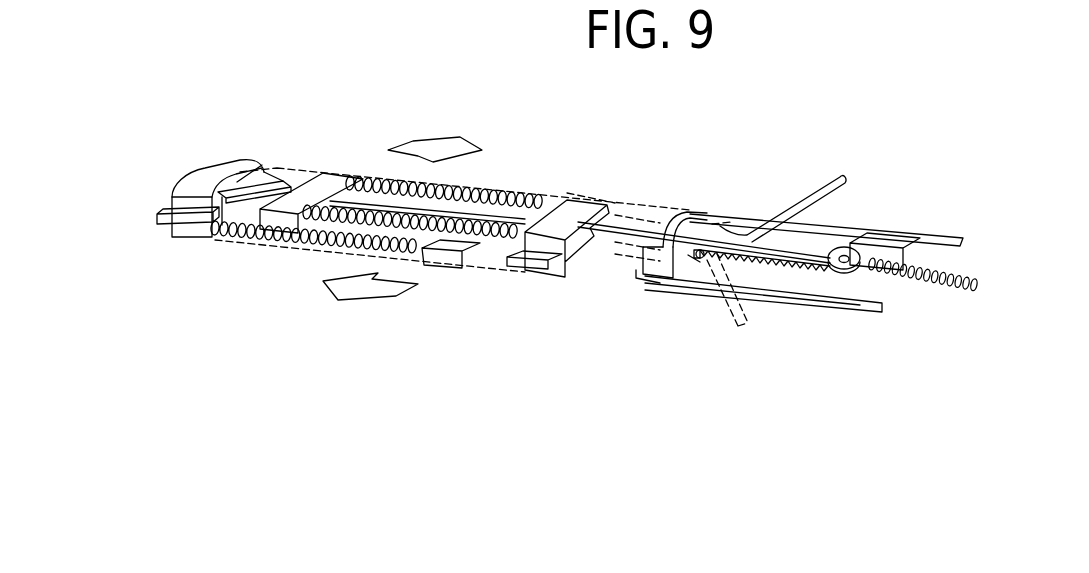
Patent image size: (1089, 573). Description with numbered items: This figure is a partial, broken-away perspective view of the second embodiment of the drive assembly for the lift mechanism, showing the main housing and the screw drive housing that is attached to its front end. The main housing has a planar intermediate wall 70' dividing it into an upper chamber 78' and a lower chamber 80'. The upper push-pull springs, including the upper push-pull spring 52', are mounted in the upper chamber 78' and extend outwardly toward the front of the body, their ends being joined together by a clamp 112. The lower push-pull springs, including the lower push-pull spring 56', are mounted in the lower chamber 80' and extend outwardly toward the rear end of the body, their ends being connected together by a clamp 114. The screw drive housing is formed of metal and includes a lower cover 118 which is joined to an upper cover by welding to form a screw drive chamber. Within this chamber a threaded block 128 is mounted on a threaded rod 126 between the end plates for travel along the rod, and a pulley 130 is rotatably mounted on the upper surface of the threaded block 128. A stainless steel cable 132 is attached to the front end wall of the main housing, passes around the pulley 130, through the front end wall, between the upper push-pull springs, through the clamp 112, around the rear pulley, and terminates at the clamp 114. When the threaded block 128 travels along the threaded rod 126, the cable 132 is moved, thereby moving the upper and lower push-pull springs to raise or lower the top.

The upper push-pull spring 52' is at (446, 168).
The lower push-pull spring 56' is at (313, 154).
The intermediate wall 70' is at (227, 167).
The upper chamber 78' is at (261, 148).
The lower chamber 80' is at (190, 247).
The clamp 112 is at (340, 165).
The clamp 114 is at (440, 267).
The lower cover 118 is at (847, 310).
The threaded rod 126 is at (972, 275).
The threaded block 128 is at (875, 250).
The pulley 130 is at (852, 250).
The cable 132 is at (298, 250).